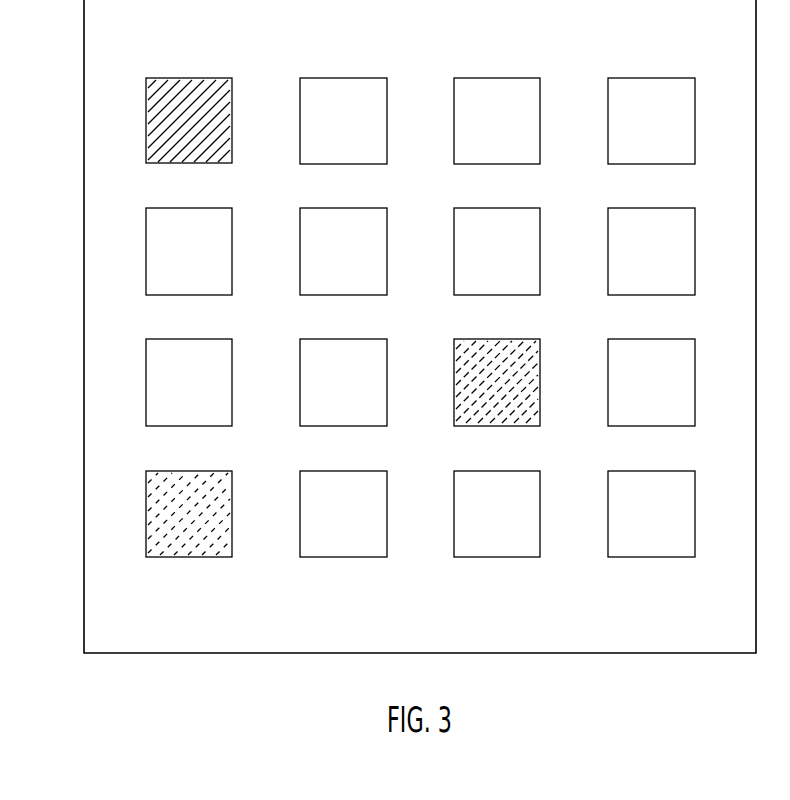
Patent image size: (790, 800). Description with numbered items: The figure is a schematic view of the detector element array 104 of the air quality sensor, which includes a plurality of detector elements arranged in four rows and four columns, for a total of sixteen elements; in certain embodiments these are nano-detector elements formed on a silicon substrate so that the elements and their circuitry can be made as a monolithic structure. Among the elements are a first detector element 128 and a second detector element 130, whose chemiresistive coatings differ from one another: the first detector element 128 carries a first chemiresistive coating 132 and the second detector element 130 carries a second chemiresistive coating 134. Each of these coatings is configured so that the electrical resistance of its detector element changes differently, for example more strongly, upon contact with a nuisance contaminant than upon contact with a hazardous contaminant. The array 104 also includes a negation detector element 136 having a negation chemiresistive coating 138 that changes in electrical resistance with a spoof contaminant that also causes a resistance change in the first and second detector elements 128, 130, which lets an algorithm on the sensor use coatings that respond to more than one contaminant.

The detector element array 104 is at (190, 671).
The first detector element 128 is at (541, 379).
The second detector element 130 is at (195, 78).
The first chemiresistive coating 132 is at (471, 388).
The second chemiresistive coating 134 is at (213, 96).
The negation detector element 136 is at (168, 472).
The negation chemiresistive coating 138 is at (200, 516).